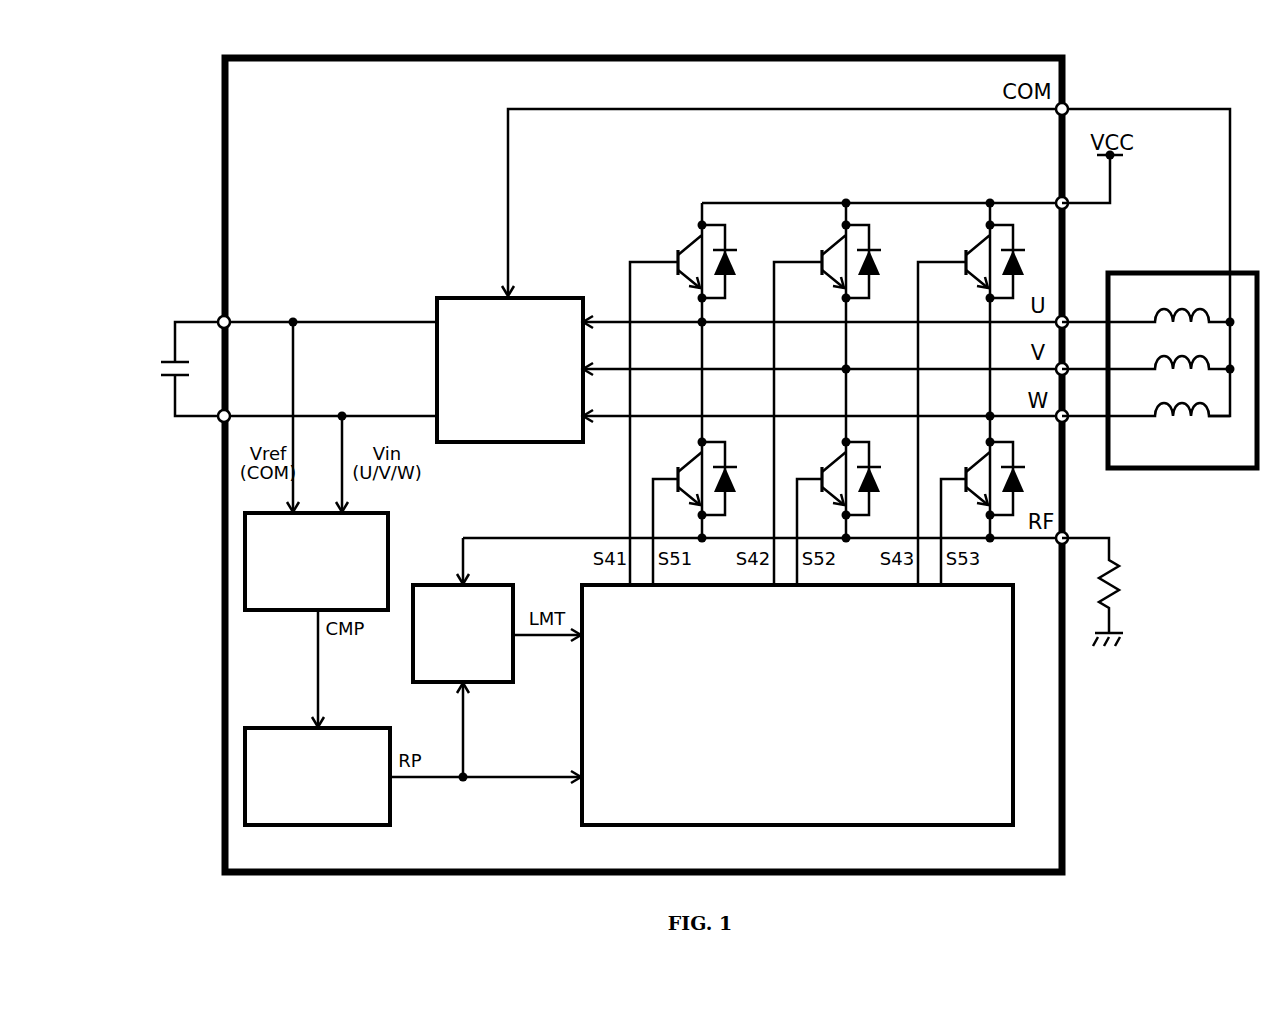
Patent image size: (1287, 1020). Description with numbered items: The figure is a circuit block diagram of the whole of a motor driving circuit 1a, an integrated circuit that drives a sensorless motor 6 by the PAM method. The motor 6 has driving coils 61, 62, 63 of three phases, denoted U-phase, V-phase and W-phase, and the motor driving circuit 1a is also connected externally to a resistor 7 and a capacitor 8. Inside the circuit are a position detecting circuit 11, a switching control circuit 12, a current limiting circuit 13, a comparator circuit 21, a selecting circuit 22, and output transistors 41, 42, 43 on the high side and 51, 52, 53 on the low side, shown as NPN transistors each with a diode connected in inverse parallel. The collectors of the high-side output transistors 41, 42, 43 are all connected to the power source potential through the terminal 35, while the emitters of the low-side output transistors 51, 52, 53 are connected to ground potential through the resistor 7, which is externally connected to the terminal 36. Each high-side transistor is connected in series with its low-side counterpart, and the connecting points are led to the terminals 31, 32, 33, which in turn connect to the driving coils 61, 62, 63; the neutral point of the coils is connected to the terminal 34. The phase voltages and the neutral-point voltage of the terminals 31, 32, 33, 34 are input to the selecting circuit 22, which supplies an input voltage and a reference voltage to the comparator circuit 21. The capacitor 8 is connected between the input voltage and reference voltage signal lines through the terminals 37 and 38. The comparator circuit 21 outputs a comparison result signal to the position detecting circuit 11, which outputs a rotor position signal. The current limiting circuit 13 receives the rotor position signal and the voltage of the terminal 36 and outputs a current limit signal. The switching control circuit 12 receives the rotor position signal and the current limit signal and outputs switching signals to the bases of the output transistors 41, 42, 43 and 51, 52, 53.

The motor driving circuit 1a is at (222, 88).
The sensorless motor 6 is at (1159, 386).
The resistor 7 is at (1119, 597).
The capacitor 8 is at (170, 362).
The position detecting circuit 11 is at (320, 827).
The switching control circuit 12 is at (1013, 586).
The current limiting circuit 13 is at (490, 684).
The comparator circuit 21 is at (388, 532).
The selecting circuit 22 is at (583, 299).
The terminal 31 is at (1067, 317).
The terminal 32 is at (1067, 364).
The terminal 33 is at (1067, 411).
The terminal 34 is at (1067, 104).
The terminal 35 is at (1067, 198).
The terminal 36 is at (1067, 533).
The terminal 37 is at (218, 317).
The terminal 38 is at (218, 421).
The output transistor 41 is at (679, 251).
The output transistor 42 is at (823, 251).
The output transistor 43 is at (967, 251).
The output transistor 51 is at (679, 468).
The output transistor 52 is at (823, 468).
The output transistor 53 is at (967, 468).
The driving coil 61 is at (1160, 312).
The driving coil 62 is at (1160, 359).
The driving coil 63 is at (1160, 406).